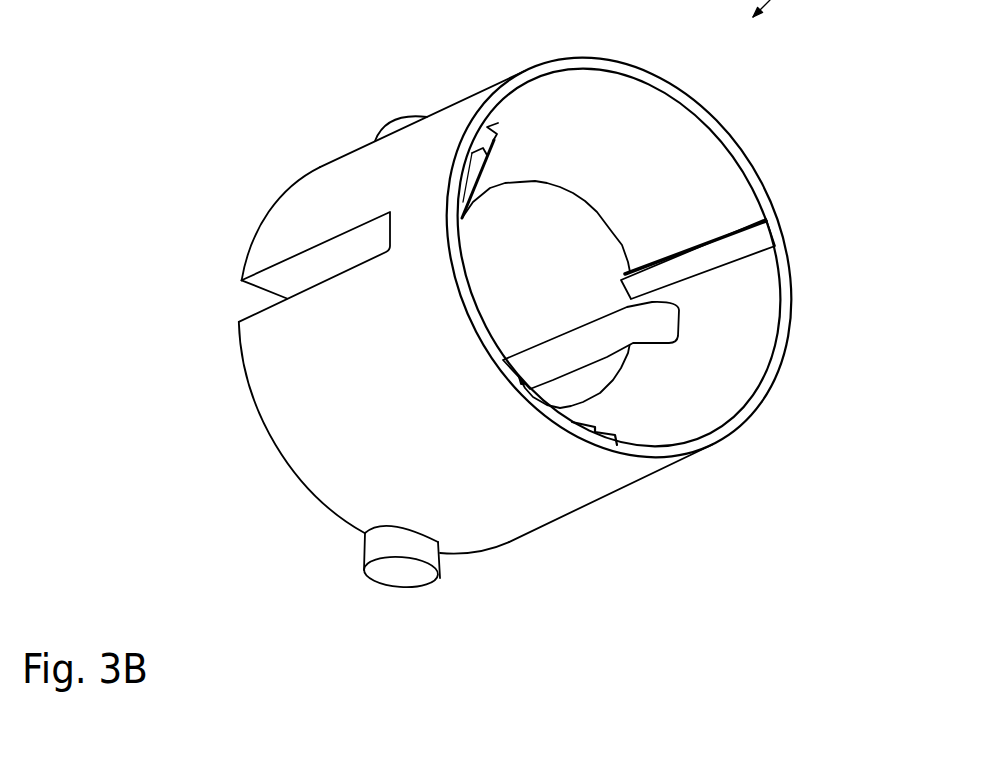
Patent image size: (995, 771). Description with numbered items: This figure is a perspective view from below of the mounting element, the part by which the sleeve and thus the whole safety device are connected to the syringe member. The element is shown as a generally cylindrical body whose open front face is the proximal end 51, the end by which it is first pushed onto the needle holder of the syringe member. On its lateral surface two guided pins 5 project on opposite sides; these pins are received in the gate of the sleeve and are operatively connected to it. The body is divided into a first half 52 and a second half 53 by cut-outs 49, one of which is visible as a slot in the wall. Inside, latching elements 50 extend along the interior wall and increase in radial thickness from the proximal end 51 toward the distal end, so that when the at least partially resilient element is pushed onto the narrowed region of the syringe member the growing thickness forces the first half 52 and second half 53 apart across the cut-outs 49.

The guided pin 5 is at (393, 127).
The cut-out 49 is at (197, 311).
The latching element 50 is at (720, 250).
The proximal end 51 is at (805, 410).
The first half 52 is at (213, 183).
The second half 53 is at (232, 486).